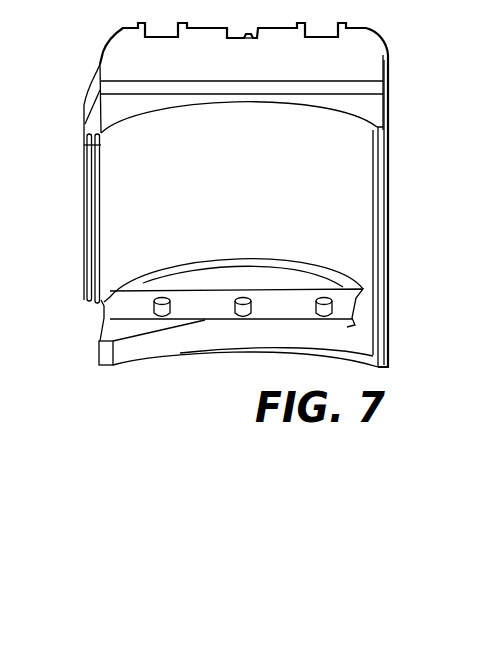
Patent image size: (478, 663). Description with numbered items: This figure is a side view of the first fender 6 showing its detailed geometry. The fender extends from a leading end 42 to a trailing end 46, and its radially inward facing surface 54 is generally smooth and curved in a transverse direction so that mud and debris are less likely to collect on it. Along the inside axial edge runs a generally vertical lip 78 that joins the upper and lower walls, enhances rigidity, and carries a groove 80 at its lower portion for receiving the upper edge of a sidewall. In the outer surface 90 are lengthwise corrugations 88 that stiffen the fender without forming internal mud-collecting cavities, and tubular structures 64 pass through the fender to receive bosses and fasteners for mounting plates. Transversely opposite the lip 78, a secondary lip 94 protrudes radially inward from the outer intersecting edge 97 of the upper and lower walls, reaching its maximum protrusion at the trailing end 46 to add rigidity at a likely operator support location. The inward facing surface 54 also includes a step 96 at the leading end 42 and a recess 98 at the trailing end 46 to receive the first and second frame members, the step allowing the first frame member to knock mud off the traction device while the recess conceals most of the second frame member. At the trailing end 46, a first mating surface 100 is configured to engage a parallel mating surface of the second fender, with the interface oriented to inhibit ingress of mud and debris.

The cradle assembly 6 is at (47, 297).
The leading end 42 is at (387, 67).
The trailing end 46 is at (389, 345).
The radially inward facing surface 54 is at (357, 222).
The tubular structures 64 is at (171, 308).
The lip 78 is at (83, 188).
The groove 80 is at (94, 246).
The corrugations 88 is at (181, 29).
The outer surface 90 is at (254, 40).
The secondary lip 94 is at (383, 154).
The step 96 is at (117, 87).
The outer intersecting edge 97 is at (388, 290).
The recess 98 is at (116, 311).
The first mating surface 100 is at (172, 355).